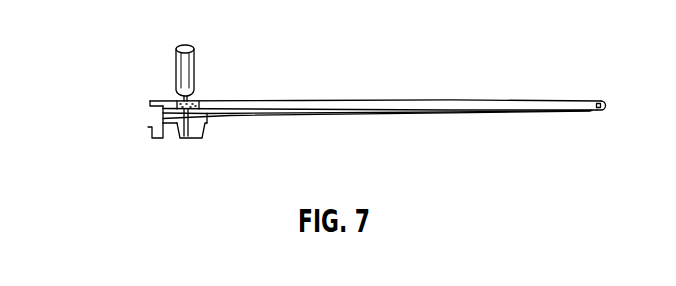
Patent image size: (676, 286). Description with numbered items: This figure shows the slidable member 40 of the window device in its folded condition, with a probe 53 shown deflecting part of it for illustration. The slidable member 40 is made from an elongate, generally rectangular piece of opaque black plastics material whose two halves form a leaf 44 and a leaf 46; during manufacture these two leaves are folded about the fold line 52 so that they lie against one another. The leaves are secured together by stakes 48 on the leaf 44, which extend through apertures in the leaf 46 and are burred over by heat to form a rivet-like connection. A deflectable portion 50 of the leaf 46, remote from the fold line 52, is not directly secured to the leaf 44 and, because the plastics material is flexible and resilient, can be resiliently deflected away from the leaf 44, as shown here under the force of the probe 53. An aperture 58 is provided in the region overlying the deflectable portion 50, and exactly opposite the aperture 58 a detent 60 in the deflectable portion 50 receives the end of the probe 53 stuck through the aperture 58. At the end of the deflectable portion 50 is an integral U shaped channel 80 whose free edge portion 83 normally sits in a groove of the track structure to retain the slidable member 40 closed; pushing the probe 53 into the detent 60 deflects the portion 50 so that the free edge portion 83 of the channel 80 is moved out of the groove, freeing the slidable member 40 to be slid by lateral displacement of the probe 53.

The slidable member 40 is at (450, 84).
The leaf 44 is at (273, 100).
The leaf 46 is at (388, 117).
The stakes 48 is at (288, 116).
The deflectable portion 50 is at (235, 123).
The fold line 52 is at (606, 105).
The probe 53 is at (194, 96).
The aperture 58 is at (178, 100).
The detent 60 is at (193, 139).
The U shaped channel 80 is at (160, 122).
The free edge portion 83 is at (149, 132).